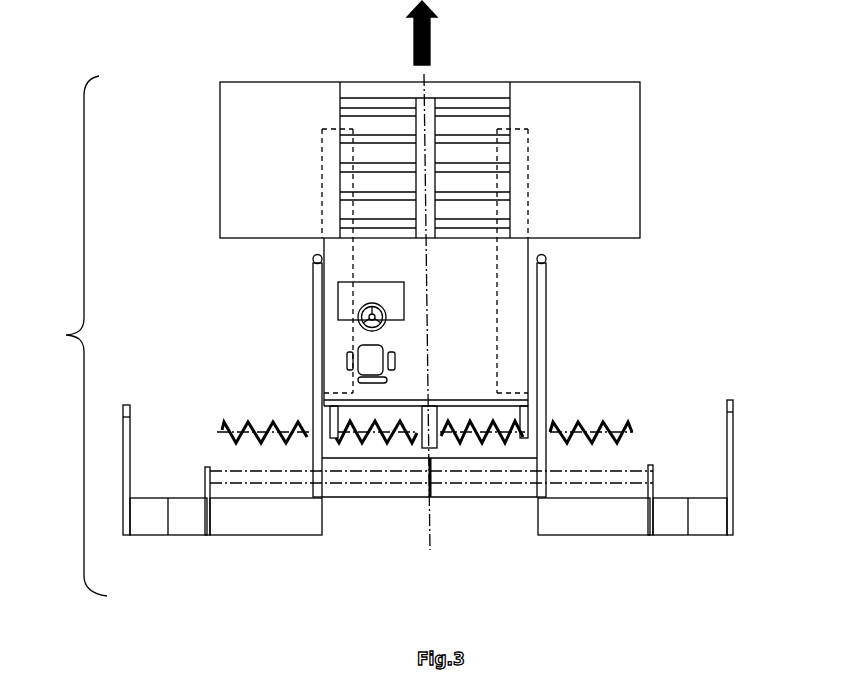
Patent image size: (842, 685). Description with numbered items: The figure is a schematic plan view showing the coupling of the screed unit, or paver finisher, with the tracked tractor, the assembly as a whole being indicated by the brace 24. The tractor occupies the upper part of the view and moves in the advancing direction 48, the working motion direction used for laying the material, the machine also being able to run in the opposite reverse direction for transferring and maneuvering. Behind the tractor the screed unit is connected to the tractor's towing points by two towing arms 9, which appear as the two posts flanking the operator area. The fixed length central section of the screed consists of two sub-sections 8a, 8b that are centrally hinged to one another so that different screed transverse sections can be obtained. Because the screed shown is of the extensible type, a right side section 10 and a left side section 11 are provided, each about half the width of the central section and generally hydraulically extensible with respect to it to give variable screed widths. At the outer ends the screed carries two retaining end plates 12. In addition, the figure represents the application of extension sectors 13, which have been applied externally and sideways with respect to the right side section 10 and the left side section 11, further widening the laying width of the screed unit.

The advancing direction 48 is at (431, 37).
The towing arms 9 is at (308, 283).
The retaining end plates 12 is at (130, 418).
The extension sectors 13 is at (188, 522).
The left side section 11 is at (272, 525).
The right side section 10 is at (598, 522).
The sub-section 8a is at (407, 468).
The sub-section 8b is at (458, 468).
The vehicle module 24 is at (69, 336).